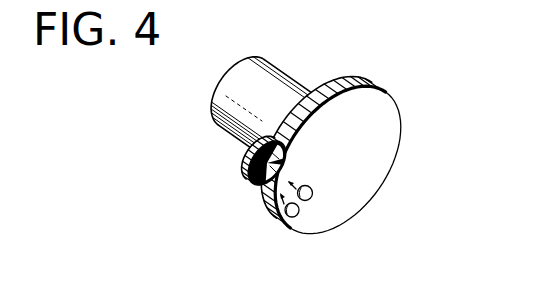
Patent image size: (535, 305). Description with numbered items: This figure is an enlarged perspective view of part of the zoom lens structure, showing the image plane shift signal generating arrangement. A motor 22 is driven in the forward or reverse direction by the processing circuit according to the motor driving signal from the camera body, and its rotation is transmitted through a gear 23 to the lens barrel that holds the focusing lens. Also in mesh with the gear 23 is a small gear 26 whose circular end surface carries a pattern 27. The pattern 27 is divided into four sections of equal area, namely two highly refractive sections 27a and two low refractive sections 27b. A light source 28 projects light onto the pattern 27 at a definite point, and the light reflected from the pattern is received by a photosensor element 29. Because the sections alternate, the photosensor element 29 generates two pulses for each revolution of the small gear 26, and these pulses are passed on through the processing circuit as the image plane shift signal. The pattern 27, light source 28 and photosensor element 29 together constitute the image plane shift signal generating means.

The motor 22 is at (297, 72).
The gear 23 is at (400, 124).
The small gear 26 is at (227, 194).
The pattern 27 is at (259, 186).
The highly refractive section 27a is at (270, 182).
The low refractive section 27b is at (250, 178).
The light source 28 is at (312, 190).
The photosensor element 29 is at (298, 216).